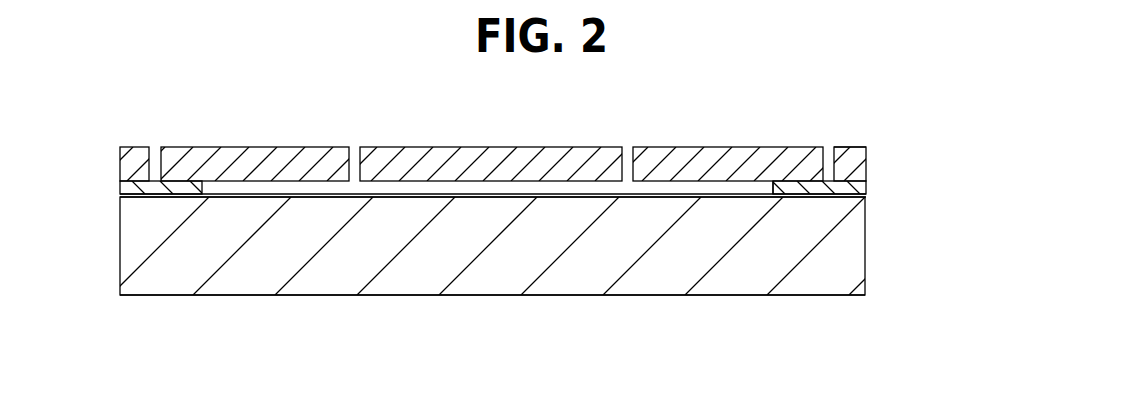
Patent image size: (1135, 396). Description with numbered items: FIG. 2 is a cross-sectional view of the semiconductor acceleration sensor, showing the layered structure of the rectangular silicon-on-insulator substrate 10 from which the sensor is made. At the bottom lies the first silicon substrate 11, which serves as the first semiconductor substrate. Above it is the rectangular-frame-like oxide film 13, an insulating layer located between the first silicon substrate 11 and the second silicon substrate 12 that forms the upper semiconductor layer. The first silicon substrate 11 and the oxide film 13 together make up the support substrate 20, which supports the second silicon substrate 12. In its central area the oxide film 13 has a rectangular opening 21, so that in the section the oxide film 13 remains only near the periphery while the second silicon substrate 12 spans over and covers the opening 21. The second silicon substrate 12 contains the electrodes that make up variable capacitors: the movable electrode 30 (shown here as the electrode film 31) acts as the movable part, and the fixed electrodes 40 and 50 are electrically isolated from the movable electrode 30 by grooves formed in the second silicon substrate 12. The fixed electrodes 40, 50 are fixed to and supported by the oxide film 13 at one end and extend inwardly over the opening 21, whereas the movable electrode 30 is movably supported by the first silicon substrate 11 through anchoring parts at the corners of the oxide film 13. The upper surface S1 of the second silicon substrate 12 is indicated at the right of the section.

The silicon-on-insulator substrate 10 is at (276, 300).
The first silicon substrate 11 is at (856, 247).
The second silicon substrate 12 is at (858, 161).
The oxide film 13 is at (858, 184).
The support substrate 20 is at (913, 258).
The opening 21 is at (774, 184).
The movable electrode 30 is at (500, 132).
The electrode film 31 is at (477, 145).
The fixed electrode 40 is at (703, 147).
The fixed electrode 50 is at (252, 147).
The surface S1 is at (900, 109).